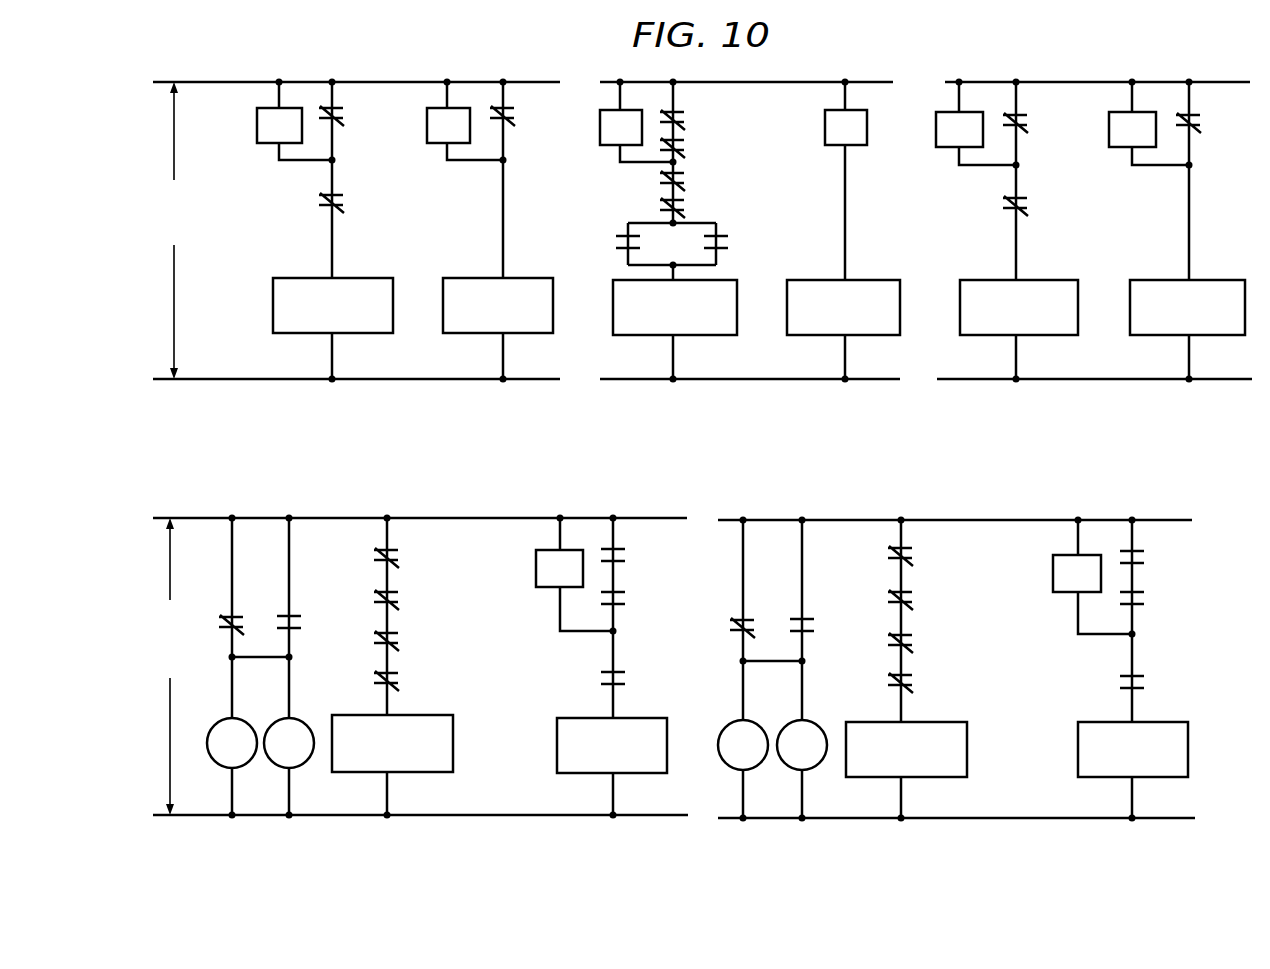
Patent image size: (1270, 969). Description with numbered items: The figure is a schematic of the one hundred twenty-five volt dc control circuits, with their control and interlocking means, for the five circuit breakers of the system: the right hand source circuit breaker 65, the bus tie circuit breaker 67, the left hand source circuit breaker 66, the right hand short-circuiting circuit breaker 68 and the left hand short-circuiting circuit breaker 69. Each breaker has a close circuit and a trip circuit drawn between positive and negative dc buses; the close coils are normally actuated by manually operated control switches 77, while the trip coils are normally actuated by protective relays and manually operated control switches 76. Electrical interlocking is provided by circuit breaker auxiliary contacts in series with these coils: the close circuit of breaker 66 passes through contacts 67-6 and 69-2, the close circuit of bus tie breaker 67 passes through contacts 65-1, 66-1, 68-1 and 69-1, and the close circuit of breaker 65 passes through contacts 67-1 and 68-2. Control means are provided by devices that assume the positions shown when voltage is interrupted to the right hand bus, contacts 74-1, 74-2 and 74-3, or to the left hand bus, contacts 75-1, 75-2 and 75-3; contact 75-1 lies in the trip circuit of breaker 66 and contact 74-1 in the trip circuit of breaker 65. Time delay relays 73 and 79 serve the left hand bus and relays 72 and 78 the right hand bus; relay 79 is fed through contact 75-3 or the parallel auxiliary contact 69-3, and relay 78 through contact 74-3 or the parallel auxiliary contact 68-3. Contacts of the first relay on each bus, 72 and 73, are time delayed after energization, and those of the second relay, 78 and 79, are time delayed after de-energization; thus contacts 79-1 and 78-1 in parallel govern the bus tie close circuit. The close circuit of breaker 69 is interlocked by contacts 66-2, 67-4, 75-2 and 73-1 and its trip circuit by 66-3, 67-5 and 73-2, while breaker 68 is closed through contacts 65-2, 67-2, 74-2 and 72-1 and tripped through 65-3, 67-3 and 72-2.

The right hand source circuit breaker 65 is at (1082, 254).
The left hand source circuit breaker 66 is at (346, 253).
The bus tie circuit breaker 67 is at (740, 254).
The right hand short-circuiting circuit breaker 68 is at (937, 691).
The left hand short-circuiting circuit breaker 69 is at (406, 687).
The time delay relay 72 is at (786, 762).
The time delay relay 73 is at (272, 762).
The manually operated control switch 76 is at (462, 136).
The manually operated control switch 77 is at (293, 136).
The time delay relay 78 is at (726, 761).
The time delay relay 79 is at (214, 758).
The circuit breaker auxiliary contact 67-6 is at (357, 106).
The circuit breaker auxiliary contact 69-2 is at (357, 205).
The left hand bus voltage-responsive device contact 75-1 is at (529, 106).
The circuit breaker auxiliary contact 65-1 is at (699, 118).
The circuit breaker auxiliary contact 66-1 is at (699, 146).
The circuit breaker auxiliary contact 68-1 is at (699, 178).
The circuit breaker auxiliary contact 69-1 is at (699, 205).
The time delay relay contact 79-1 is at (601, 239).
The time delay relay contact 78-1 is at (744, 239).
The circuit breaker auxiliary contact 67-1 is at (1042, 121).
The circuit breaker auxiliary contact 68-2 is at (1042, 208).
The right hand bus voltage-responsive device contact 74-1 is at (1217, 121).
The left hand bus voltage-responsive device contact 75-3 is at (237, 612).
The circuit breaker auxiliary contact 69-3 is at (311, 608).
The circuit breaker auxiliary contact 66-2 is at (416, 551).
The circuit breaker auxiliary contact 67-4 is at (416, 604).
The left hand bus voltage-responsive device contact 75-2 is at (416, 641).
The time delay relay contact 73-1 is at (416, 677).
The circuit breaker auxiliary contact 66-3 is at (642, 561).
The circuit breaker auxiliary contact 67-5 is at (642, 600).
The time delay relay contact 73-2 is at (642, 680).
The right hand bus voltage-responsive device contact 74-3 is at (713, 634).
The circuit breaker auxiliary contact 68-3 is at (829, 634).
The circuit breaker auxiliary contact 65-2 is at (930, 552).
The circuit breaker auxiliary contact 67-2 is at (930, 595).
The right hand bus voltage-responsive device contact 74-2 is at (930, 640).
The time delay relay contact 72-1 is at (930, 679).
The circuit breaker auxiliary contact 65-3 is at (1161, 560).
The circuit breaker auxiliary contact 67-3 is at (1161, 604).
The time delay relay contact 72-2 is at (1161, 680).